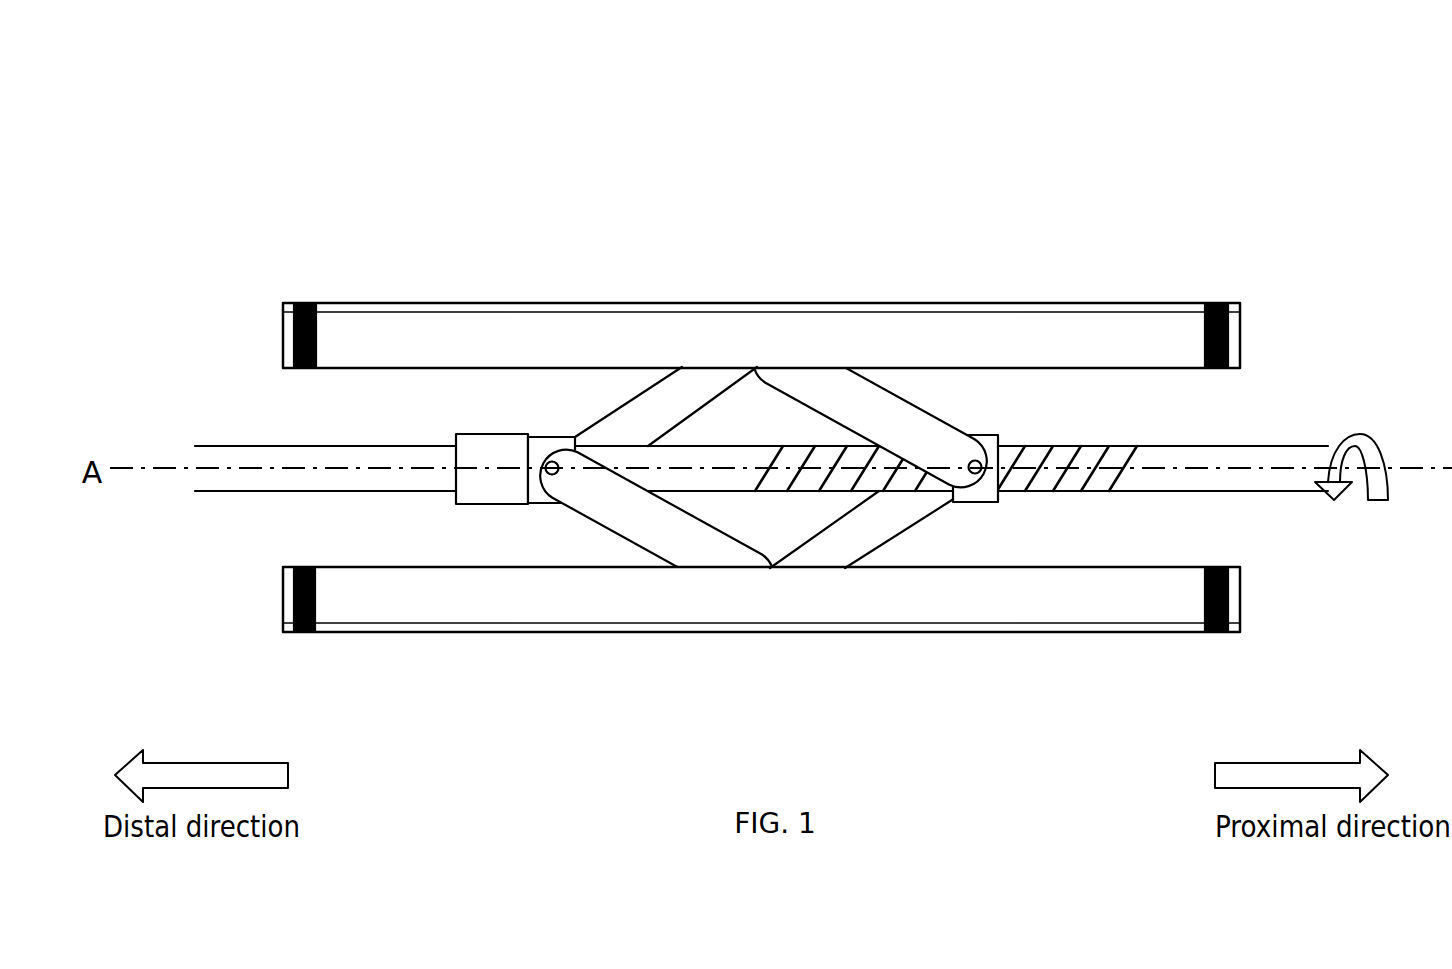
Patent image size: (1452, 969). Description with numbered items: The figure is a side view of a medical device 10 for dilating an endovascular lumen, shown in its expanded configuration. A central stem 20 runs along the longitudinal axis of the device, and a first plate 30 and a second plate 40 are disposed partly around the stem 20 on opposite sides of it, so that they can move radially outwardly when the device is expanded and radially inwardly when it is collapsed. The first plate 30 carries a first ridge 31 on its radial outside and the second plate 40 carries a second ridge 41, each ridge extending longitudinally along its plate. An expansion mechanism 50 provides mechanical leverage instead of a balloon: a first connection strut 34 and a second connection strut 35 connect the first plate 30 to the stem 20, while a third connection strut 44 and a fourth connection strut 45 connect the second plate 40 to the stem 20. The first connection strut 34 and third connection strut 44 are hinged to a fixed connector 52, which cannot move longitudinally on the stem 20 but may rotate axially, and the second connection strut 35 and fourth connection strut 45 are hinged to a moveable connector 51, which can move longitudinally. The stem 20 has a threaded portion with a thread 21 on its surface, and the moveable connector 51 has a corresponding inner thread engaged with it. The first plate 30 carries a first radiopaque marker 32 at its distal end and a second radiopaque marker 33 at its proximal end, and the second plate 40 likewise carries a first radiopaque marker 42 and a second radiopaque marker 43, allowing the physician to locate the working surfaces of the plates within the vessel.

The medical device 10 is at (547, 253).
The central stem 20 is at (1190, 435).
The thread 21 is at (1023, 492).
The first plate 30 is at (771, 241).
The first ridge 31 is at (720, 302).
The first radiopaque marker 32 is at (303, 302).
The second radiopaque marker 33 is at (1218, 302).
The first connection strut 34 is at (628, 398).
The second connection strut 35 is at (882, 388).
The second plate 40 is at (761, 669).
The second ridge 41 is at (627, 635).
The first radiopaque marker 42 is at (313, 634).
The second radiopaque marker 43 is at (1213, 634).
The third connection strut 44 is at (587, 522).
The fourth connection strut 45 is at (928, 522).
The expansion mechanism 50 is at (1012, 406).
The moveable connector 51 is at (978, 435).
The fixed connector 52 is at (553, 437).